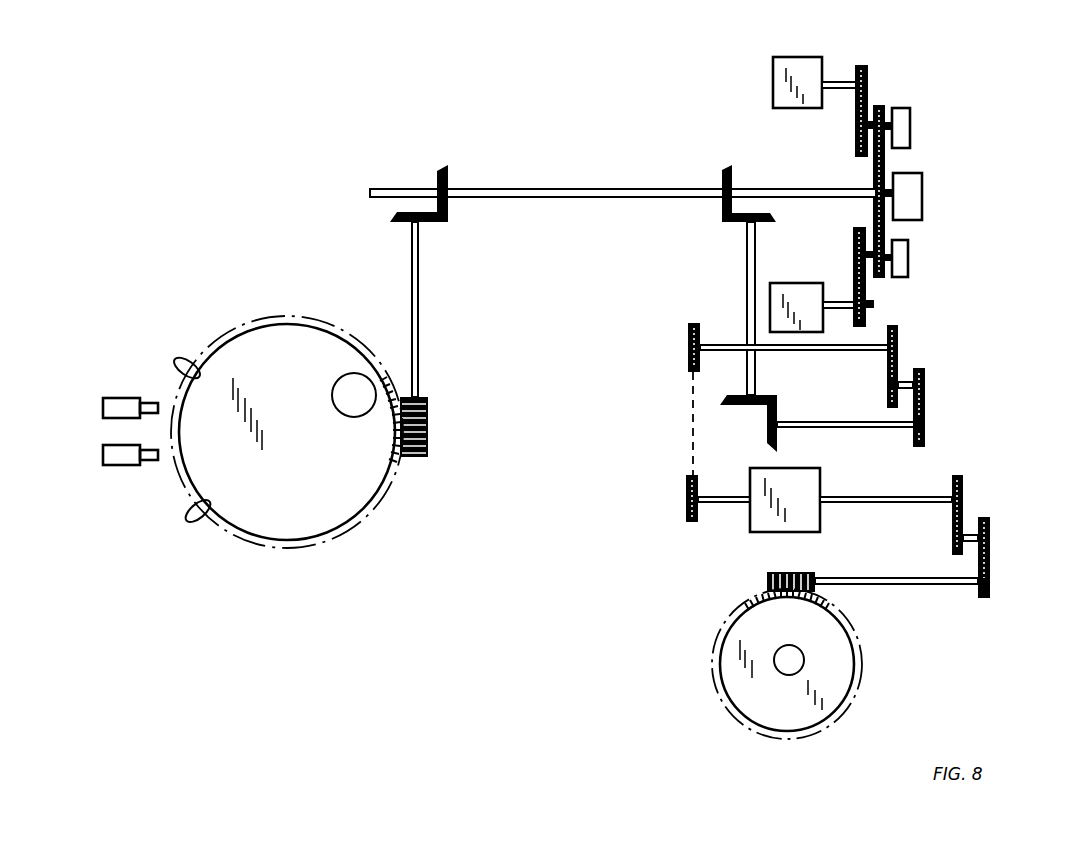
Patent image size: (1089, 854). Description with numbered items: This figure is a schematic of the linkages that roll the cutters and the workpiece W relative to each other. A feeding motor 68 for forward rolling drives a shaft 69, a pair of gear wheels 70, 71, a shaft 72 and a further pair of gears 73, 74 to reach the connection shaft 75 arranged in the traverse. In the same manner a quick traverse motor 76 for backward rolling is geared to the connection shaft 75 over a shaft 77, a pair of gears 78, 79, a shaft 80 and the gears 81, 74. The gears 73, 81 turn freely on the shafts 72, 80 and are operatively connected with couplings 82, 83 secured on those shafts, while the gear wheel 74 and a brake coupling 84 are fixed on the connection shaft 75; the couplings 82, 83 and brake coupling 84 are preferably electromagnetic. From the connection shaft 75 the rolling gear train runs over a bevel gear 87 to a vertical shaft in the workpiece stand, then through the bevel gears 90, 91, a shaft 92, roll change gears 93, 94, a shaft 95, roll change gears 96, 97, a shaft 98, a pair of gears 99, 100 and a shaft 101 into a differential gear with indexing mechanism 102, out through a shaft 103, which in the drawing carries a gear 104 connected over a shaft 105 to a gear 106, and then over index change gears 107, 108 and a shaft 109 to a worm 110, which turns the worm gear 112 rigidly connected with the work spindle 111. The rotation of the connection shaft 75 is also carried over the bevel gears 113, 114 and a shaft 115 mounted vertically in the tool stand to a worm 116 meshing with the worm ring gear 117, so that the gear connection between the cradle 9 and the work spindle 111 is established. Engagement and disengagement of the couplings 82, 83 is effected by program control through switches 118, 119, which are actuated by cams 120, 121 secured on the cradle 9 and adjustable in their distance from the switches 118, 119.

The cradle 9 is at (268, 530).
The workpiece W is at (345, 408).
The feeding motor 68 is at (800, 67).
The shaft 69 is at (851, 84).
The gear wheel 70 is at (866, 68).
The gear wheel 71 is at (858, 122).
The shaft 72 is at (877, 112).
The gear 73 is at (886, 108).
The gear wheel 74 is at (886, 176).
The connection shaft 75 is at (522, 189).
The quick traverse motor 76 is at (790, 296).
The shaft 77 is at (838, 299).
The gear 78 is at (868, 305).
The gear 79 is at (858, 250).
The shaft 80 is at (870, 236).
The gear 81 is at (886, 243).
The coupling 82 is at (910, 128).
The coupling 83 is at (908, 262).
The brake coupling 84 is at (908, 191).
The bevel gear 87 is at (722, 168).
The bevel gear 90 is at (731, 397).
The bevel gear 91 is at (778, 420).
The shaft 92 is at (848, 428).
The roll change gear 93 is at (926, 422).
The roll change gear 94 is at (926, 390).
The shaft 95 is at (912, 380).
The roll change gear 96 is at (887, 392).
The roll change gear 97 is at (898, 338).
The shaft 98 is at (811, 350).
The gear 99 is at (688, 345).
The gear 100 is at (686, 495).
The shaft 101 is at (722, 505).
The differential gear with indexing mechanism 102 is at (770, 525).
The shaft 103 is at (862, 496).
The gear 104 is at (963, 495).
The shaft 105 is at (965, 540).
The gear 106 is at (981, 525).
The index change gear 107 is at (991, 540).
The index change gear 108 is at (991, 583).
The shaft 109 is at (895, 586).
The worm 110 is at (795, 573).
The work spindle 111 is at (795, 653).
The worm gear 112 is at (748, 600).
The bevel gear 113 is at (437, 178).
The bevel gear 114 is at (433, 225).
The shaft 115 is at (419, 302).
The worm 116 is at (430, 406).
The worm ring gear 117 is at (400, 462).
The switch 118 is at (104, 402).
The switch 119 is at (104, 455).
The cam 120 is at (185, 360).
The cam 121 is at (195, 515).